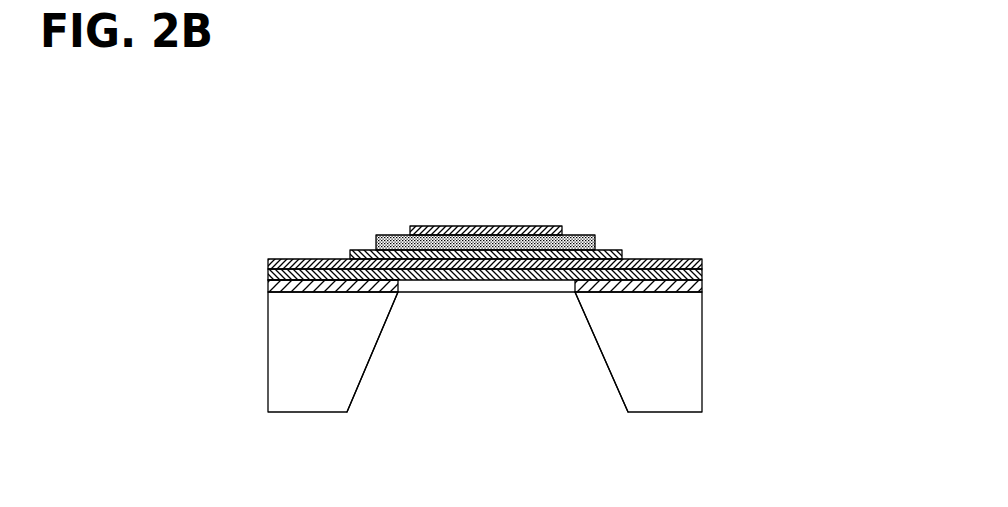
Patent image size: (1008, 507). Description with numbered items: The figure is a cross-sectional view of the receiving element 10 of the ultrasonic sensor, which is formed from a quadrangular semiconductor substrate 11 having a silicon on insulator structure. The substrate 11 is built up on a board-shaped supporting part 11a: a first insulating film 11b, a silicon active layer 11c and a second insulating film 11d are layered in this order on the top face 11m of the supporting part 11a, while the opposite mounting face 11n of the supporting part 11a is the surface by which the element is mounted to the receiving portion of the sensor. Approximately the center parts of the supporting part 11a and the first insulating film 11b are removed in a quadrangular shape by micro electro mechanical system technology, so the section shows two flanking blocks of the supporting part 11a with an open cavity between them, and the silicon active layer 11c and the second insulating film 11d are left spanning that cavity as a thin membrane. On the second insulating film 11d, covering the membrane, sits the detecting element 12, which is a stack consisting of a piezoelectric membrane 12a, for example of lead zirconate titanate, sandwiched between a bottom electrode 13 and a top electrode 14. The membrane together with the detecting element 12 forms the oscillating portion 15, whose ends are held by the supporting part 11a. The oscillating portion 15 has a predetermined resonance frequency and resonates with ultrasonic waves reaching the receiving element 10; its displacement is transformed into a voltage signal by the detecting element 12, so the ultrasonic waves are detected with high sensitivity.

The receiving element 10 is at (634, 167).
The semiconductor substrate 11 is at (815, 222).
The supporting part 11a is at (698, 354).
The first insulating film 11b is at (702, 291).
The silicon active layer 11c is at (702, 279).
The second insulating film 11d is at (702, 265).
The top face 11m is at (300, 287).
The mounting face 11n is at (317, 412).
The detecting element 12 is at (497, 153).
The piezoelectric membrane 12a is at (397, 243).
The bottom electrode 13 is at (367, 256).
The top electrode 14 is at (463, 226).
The oscillating portion 15 is at (486, 288).